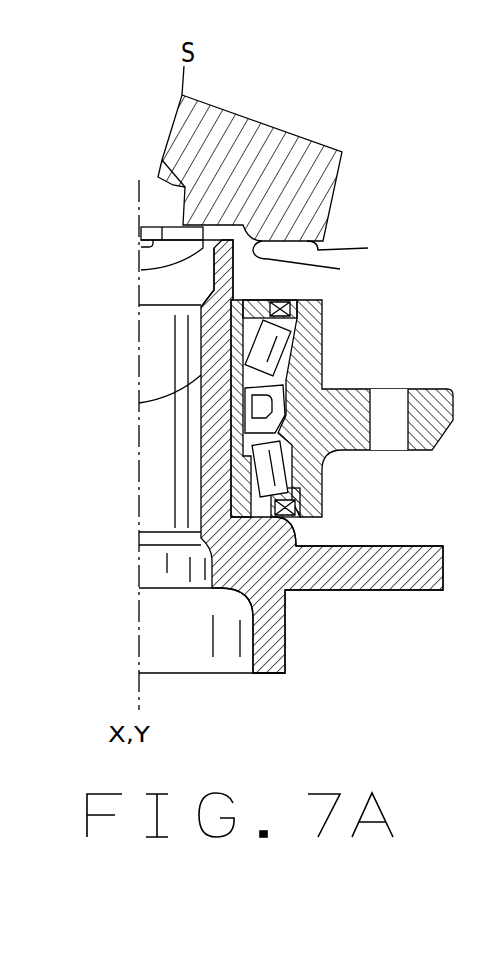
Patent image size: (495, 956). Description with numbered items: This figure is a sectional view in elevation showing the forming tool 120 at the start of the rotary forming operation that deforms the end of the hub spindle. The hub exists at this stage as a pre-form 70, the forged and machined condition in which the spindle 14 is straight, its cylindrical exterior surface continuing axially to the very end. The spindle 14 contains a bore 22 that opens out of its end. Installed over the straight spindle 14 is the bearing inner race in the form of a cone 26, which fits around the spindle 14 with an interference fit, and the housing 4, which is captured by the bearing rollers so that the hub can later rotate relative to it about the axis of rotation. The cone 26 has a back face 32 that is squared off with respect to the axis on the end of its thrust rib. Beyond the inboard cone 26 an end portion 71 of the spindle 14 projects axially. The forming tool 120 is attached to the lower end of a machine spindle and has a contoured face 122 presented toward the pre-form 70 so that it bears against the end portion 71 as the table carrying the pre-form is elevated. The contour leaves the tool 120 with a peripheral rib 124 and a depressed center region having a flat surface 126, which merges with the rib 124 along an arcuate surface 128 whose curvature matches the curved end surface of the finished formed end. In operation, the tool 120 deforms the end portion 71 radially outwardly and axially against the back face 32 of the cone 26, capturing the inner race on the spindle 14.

The forming tool 120 is at (272, 151).
The contoured face 122 is at (141, 246).
The peripheral rib 124 is at (360, 247).
The flat surface 126 is at (141, 269).
The arcuate surface 128 is at (340, 269).
The end portion 71 is at (213, 268).
The back face 32 is at (263, 300).
The cone 26 is at (201, 380).
The bore 22 is at (201, 437).
The spindle 14 is at (201, 487).
The housing 4 is at (344, 463).
The pre-form 70 is at (317, 622).